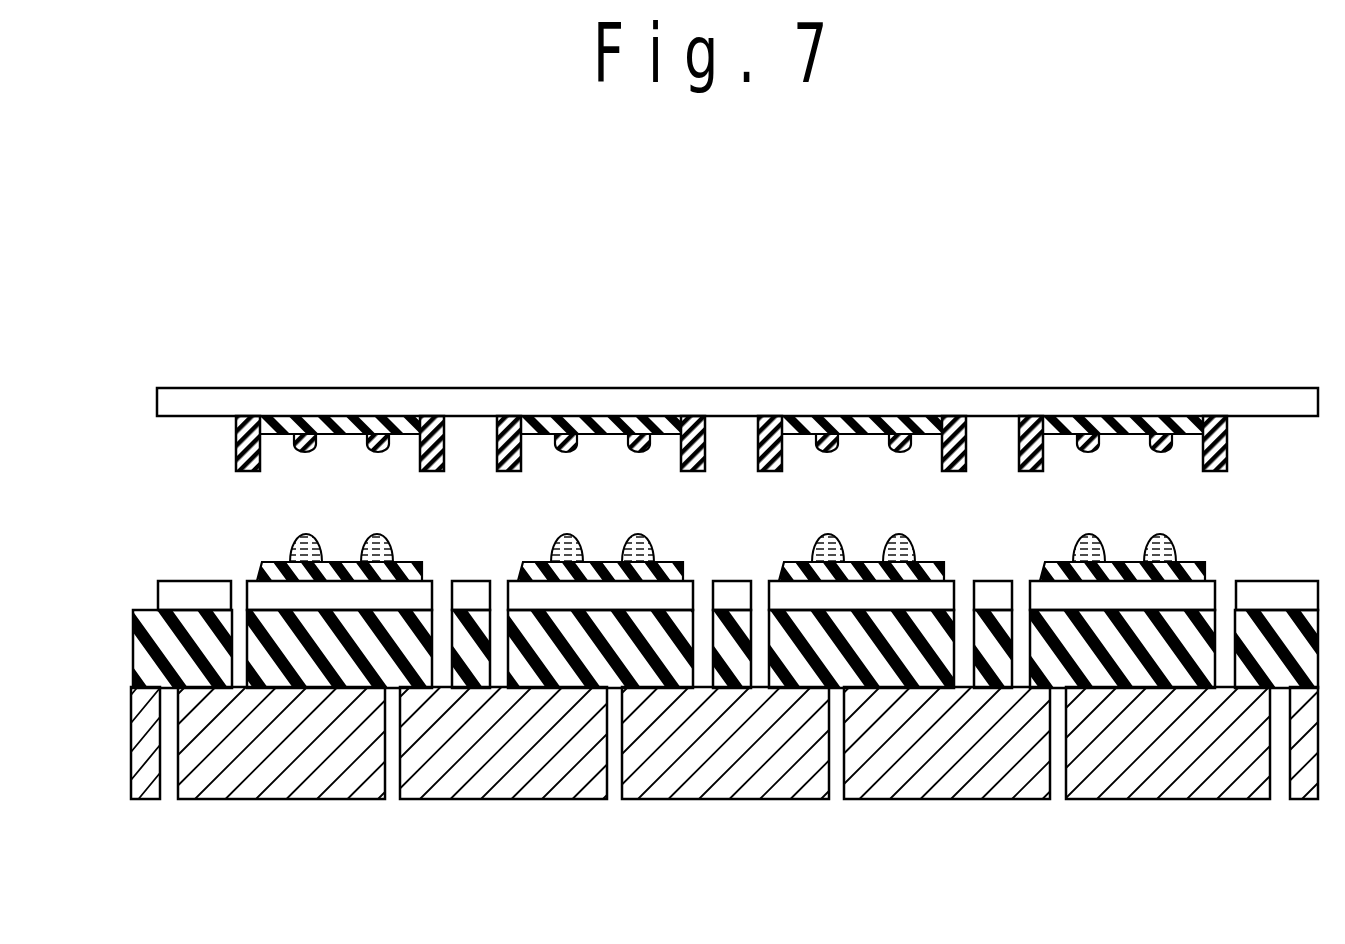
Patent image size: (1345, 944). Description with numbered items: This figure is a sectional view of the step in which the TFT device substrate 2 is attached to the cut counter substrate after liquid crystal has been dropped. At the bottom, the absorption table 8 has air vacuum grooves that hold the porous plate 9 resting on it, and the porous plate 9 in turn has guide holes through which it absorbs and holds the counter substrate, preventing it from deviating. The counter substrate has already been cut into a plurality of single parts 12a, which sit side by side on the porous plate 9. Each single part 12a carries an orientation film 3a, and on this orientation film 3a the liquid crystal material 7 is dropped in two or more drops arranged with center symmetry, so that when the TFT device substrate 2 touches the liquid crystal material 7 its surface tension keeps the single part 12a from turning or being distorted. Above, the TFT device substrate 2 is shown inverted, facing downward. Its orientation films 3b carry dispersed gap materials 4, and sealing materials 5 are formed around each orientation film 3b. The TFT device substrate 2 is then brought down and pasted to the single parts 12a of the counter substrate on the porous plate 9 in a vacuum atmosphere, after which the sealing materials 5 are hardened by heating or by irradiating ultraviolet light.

The TFT device substrate 2 is at (1273, 398).
The orientation film 3a is at (1190, 565).
The orientation film 3b is at (1068, 416).
The gap material 4 is at (848, 420).
The sealing material 5 is at (712, 418).
The liquid crystal material 7 is at (304, 533).
The absorption table 8 is at (1142, 775).
The porous plate 9 is at (908, 650).
The single part 12a is at (1207, 592).